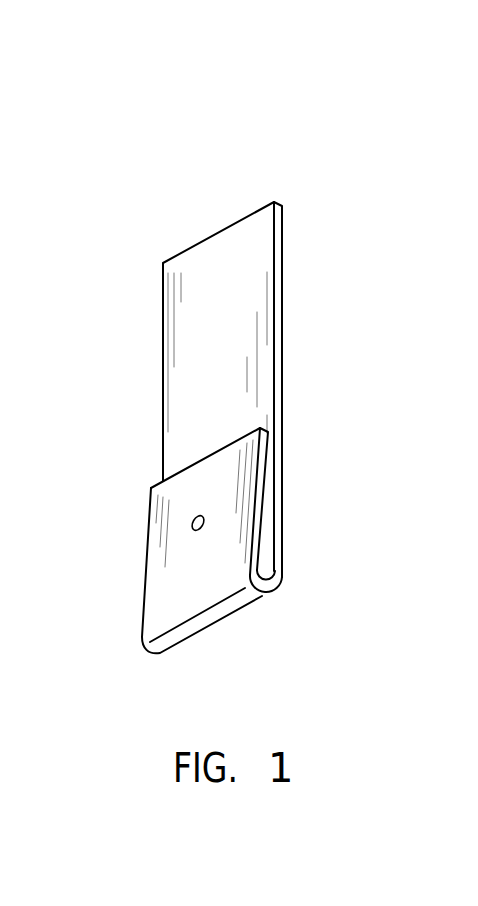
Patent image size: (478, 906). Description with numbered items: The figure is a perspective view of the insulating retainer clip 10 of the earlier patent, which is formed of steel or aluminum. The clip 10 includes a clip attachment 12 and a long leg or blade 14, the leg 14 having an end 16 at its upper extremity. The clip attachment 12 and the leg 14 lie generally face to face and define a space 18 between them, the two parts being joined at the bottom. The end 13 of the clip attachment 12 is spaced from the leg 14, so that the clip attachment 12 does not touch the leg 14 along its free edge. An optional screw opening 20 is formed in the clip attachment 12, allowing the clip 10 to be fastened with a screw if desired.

The clip 10 is at (276, 168).
The clip attachment 12 is at (163, 512).
The end of clip attachment 13 is at (215, 452).
The long leg or blade 14 is at (283, 485).
The end 16 is at (217, 233).
The space 18 is at (268, 547).
The screw opening 20 is at (193, 528).